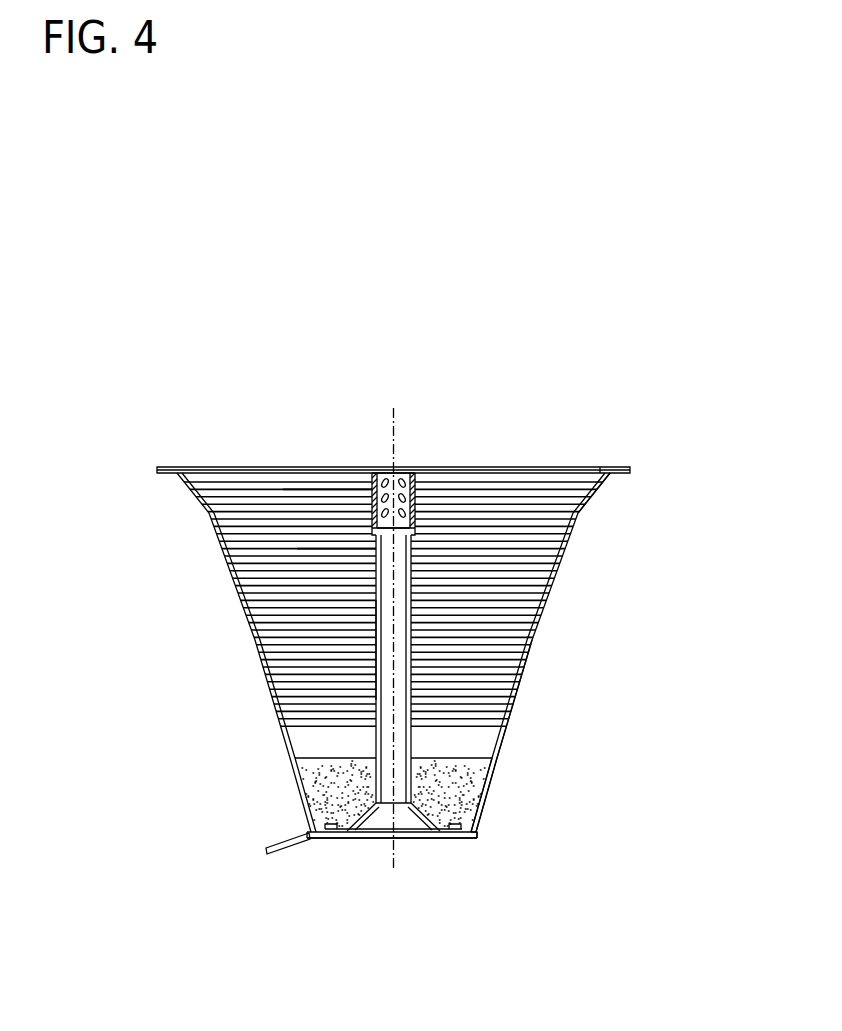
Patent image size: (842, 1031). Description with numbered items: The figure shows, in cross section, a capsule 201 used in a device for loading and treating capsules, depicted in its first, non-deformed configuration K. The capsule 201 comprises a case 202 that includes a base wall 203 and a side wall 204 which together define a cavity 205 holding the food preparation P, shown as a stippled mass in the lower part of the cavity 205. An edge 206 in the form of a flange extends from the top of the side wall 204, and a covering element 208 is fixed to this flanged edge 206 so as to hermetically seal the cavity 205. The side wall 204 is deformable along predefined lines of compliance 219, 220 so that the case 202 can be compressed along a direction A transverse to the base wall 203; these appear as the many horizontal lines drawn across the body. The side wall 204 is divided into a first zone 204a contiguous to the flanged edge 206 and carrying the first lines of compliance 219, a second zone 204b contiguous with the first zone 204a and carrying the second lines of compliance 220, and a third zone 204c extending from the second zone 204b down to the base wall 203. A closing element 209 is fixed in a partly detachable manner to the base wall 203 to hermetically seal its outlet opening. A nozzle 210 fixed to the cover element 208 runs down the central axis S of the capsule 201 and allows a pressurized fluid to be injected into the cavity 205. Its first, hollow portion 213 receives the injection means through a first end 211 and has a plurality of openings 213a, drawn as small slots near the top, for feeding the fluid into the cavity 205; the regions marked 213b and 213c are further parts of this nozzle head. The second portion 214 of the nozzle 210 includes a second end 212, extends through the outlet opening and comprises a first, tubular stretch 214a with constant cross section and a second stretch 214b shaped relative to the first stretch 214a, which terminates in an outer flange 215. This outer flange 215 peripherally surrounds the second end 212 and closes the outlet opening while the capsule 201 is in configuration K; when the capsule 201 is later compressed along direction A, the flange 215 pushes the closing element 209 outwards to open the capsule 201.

The capsule 201 is at (198, 427).
The case 202 is at (665, 612).
The base wall 203 is at (474, 838).
The side wall 204 is at (577, 569).
The first zone 204a is at (616, 489).
The second zone 204b is at (560, 622).
The third zone 204c is at (512, 770).
The cavity 205 is at (445, 748).
The edge 206 is at (170, 474).
The covering element 208 is at (612, 470).
The closing element 209 is at (428, 852).
The nozzle 210 is at (343, 630).
The first end 211 is at (383, 453).
The second end 212 is at (361, 844).
The first portion 213 is at (439, 512).
The openings 213a is at (400, 479).
The nozzle chamber bottom 213b is at (384, 531).
The nozzle top 213c is at (380, 466).
The second portion 214 is at (356, 697).
The first stretch 214a is at (372, 660).
The second stretch 214b is at (360, 803).
The outer flange 215 is at (335, 836).
The first lines of compliance 219 is at (283, 492).
The second lines of compliance 220 is at (297, 553).
The food preparation P is at (470, 766).
The first, non-deformed configuration K is at (141, 790).
The axis S is at (390, 852).
The direction A is at (795, 544).